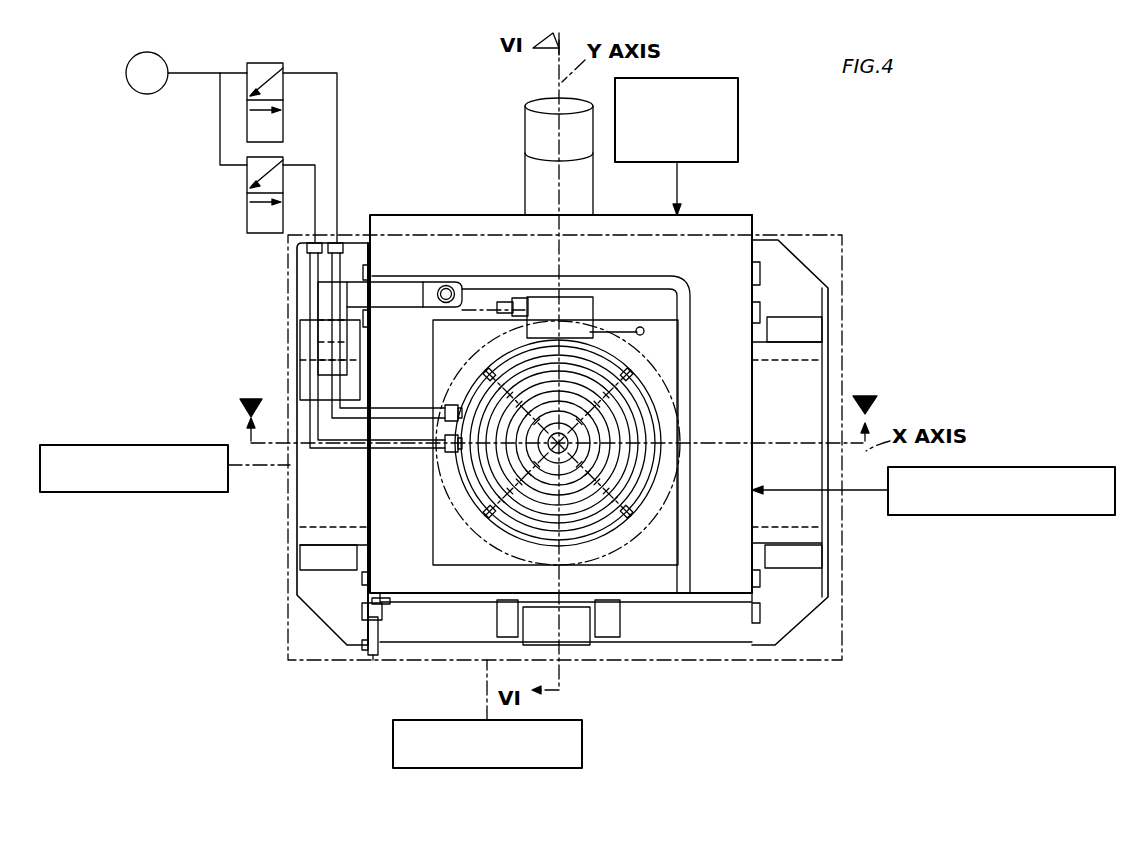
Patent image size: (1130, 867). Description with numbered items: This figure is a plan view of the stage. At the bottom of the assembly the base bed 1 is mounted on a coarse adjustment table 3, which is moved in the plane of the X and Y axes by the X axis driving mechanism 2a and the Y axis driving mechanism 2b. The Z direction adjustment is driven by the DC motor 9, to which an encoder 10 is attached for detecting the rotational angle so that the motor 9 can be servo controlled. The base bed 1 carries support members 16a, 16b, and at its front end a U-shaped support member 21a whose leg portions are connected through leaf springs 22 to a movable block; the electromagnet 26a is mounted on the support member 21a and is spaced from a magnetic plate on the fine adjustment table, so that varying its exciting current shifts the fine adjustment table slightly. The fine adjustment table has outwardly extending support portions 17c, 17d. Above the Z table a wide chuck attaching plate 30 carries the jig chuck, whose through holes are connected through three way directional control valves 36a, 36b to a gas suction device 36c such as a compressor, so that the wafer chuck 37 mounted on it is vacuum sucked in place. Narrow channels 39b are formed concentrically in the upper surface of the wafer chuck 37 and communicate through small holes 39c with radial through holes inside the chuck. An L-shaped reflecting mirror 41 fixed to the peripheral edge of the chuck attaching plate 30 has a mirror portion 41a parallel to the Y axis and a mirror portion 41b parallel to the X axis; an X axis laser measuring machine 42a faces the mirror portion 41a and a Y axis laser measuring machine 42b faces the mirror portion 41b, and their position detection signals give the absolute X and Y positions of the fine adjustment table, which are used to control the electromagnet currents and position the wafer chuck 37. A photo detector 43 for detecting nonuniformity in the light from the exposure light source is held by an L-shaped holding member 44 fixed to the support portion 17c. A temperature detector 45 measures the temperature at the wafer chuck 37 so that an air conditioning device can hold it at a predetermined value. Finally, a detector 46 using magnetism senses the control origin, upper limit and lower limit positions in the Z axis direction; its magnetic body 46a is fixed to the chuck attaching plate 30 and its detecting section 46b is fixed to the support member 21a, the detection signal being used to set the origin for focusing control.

The base bed 1 is at (800, 623).
The X axis driving mechanism 2a is at (56, 494).
The Y axis driving mechanism 2b is at (585, 752).
The coarse adjustment table 3 is at (288, 646).
The DC motor 9 is at (532, 180).
The encoder 10 is at (530, 128).
The support member 16a is at (308, 557).
The support member 16b is at (812, 558).
The support portion 17c is at (303, 377).
The support portion 17d is at (822, 350).
The U-shaped support member 21a is at (695, 640).
The leaf spring 22 is at (760, 295).
The electromagnet 26a is at (578, 642).
The chuck attaching plate 30 is at (378, 522).
The three way directional control valve 36a is at (247, 222).
The three way directional control valve 36b is at (285, 65).
The gas suction device 36c is at (126, 74).
The wafer chuck 37 is at (642, 403).
The channel 39b is at (633, 480).
The small hole 39c is at (493, 492).
The reflecting mirror 41 is at (752, 215).
The mirror portion 41a is at (752, 510).
The mirror portion 41b is at (706, 214).
The X axis laser measuring machine 42a is at (1057, 517).
The Y axis laser measuring machine 42b is at (740, 150).
The photo detector 43 is at (450, 285).
The L-shaped holding member 44 is at (402, 290).
The temperature detector 45 is at (640, 327).
The detector 46 is at (382, 622).
The magnetic body 46a is at (383, 610).
The detecting section 46b is at (364, 650).